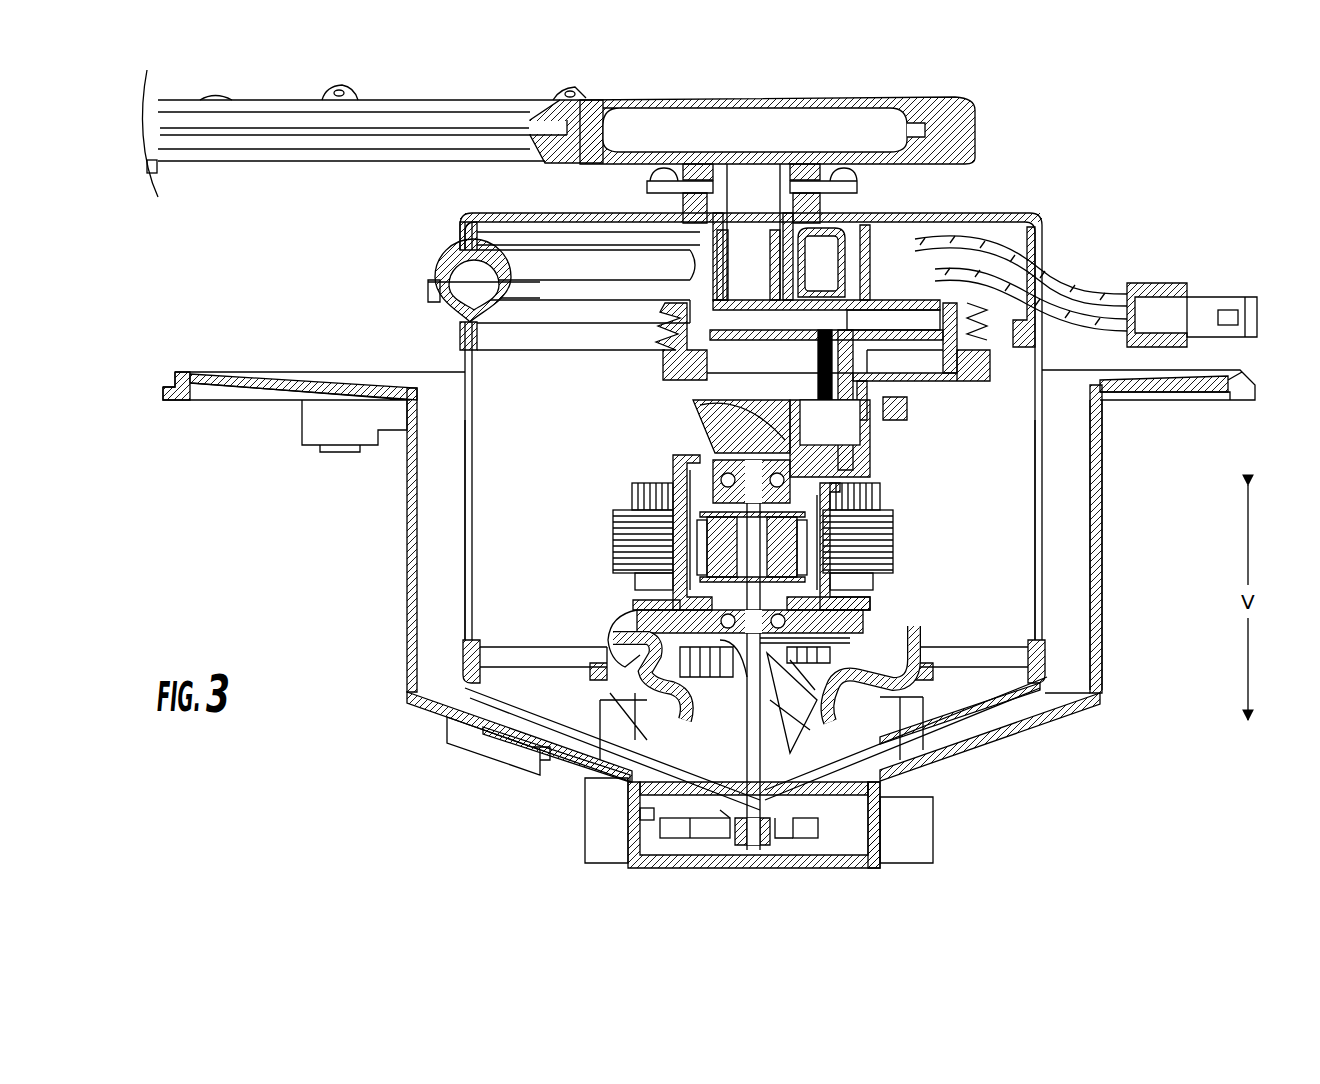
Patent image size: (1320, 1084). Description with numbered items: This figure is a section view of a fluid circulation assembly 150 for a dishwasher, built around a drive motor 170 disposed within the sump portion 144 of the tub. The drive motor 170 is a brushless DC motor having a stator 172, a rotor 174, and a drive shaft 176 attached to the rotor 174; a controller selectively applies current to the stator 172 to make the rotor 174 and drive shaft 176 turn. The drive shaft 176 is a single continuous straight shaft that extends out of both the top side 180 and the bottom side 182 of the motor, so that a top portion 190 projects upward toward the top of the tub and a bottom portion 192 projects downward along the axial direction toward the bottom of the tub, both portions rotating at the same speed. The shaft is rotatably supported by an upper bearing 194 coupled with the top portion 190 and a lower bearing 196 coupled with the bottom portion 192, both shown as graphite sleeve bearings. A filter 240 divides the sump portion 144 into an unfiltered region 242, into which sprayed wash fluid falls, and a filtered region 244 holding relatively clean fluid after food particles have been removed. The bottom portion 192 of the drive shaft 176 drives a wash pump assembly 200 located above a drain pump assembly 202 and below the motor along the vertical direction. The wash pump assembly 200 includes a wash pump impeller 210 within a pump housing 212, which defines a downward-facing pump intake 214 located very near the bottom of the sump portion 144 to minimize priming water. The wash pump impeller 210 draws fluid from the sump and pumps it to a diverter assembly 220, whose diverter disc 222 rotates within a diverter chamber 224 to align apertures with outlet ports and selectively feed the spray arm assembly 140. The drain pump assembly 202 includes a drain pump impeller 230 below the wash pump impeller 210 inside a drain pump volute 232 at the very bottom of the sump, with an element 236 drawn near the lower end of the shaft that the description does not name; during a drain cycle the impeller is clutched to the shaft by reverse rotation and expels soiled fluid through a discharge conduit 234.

The spray arm assembly 140 is at (462, 100).
The sump portion 144 is at (408, 540).
The fluid circulation assembly 150 is at (502, 548).
The drive motor 170 is at (779, 633).
The stator 172 is at (877, 530).
The rotor 174 is at (840, 540).
The drive shaft 176 is at (698, 737).
The top side 180 is at (698, 497).
The bottom side 182 is at (703, 592).
The top portion 190 is at (780, 500).
The bottom portion 192 is at (925, 683).
The upper bearing 194 is at (735, 488).
The lower bearing 196 is at (790, 594).
The wash pump assembly 200 is at (612, 712).
The drain pump assembly 202 is at (762, 880).
The wash pump impeller 210 is at (1017, 730).
The pump housing 212 is at (1000, 637).
The pump intake 214 is at (680, 800).
The diverter assembly 220 is at (645, 362).
The diverter disc 222 is at (897, 325).
The diverter chamber 224 is at (915, 358).
The drain pump impeller 230 is at (707, 830).
The drain pump volute 232 is at (853, 838).
The discharge conduit 234 is at (676, 845).
The shaft seat 236 is at (740, 835).
The filter 240 is at (510, 703).
The unfiltered region 242 is at (1069, 533).
The filtered region 244 is at (1019, 610).